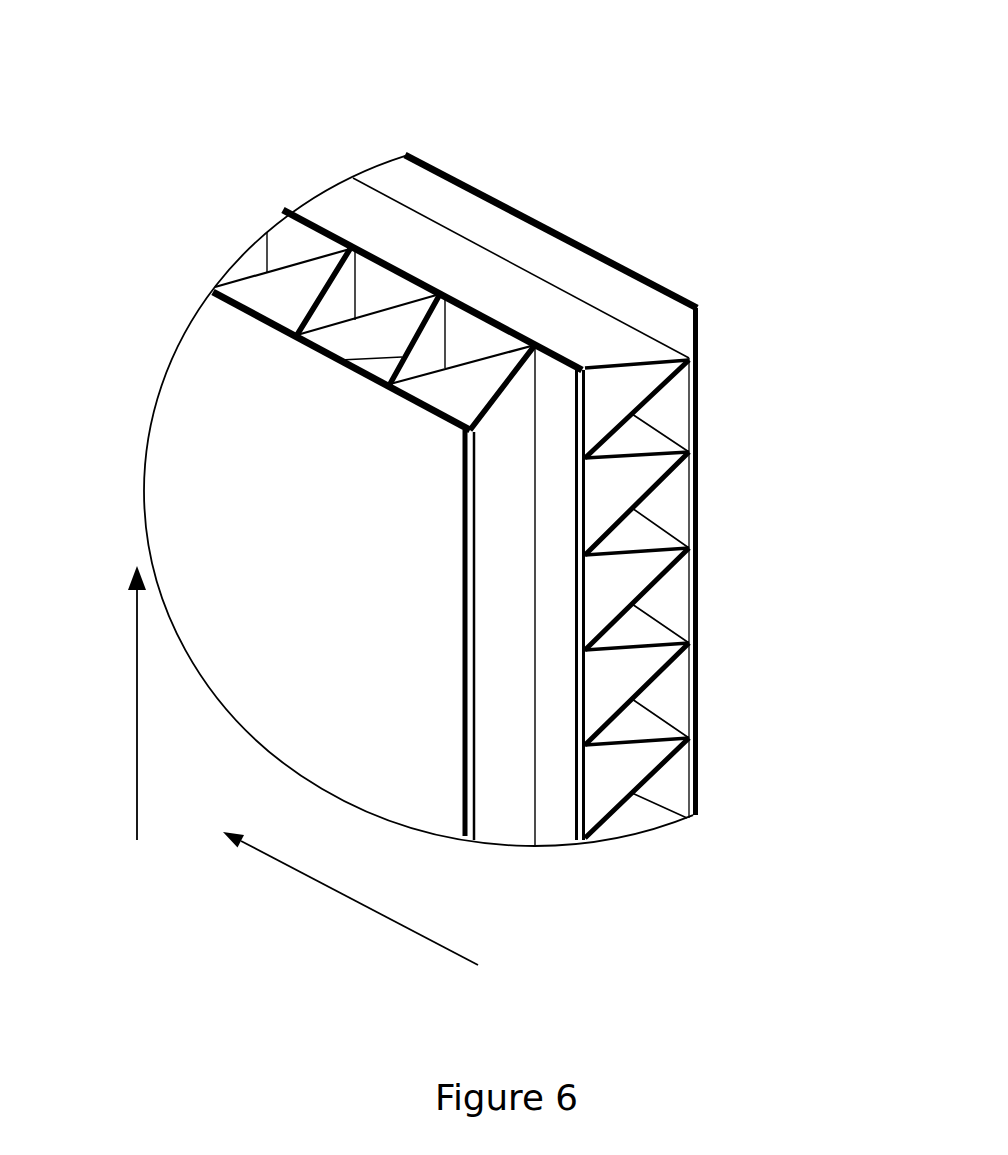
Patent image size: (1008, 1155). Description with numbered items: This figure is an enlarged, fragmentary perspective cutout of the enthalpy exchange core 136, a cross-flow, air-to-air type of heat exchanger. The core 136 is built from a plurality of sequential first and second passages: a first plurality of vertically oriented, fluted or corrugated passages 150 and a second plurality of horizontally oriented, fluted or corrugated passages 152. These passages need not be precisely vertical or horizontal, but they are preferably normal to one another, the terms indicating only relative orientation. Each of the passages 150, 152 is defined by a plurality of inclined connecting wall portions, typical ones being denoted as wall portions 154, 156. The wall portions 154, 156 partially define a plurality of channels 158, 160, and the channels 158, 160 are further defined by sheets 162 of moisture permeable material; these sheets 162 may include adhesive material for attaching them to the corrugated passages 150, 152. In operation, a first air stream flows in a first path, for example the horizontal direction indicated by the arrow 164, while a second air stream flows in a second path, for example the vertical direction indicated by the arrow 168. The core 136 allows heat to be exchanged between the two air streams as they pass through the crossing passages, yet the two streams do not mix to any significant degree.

The enthalpy exchange core 136 is at (529, 134).
The first plurality of vertically oriented fluted or corrugated passages 150 is at (287, 253).
The second plurality of horizontally oriented fluted or corrugated passages 152 is at (592, 285).
The inclined connecting wall portion 154 is at (300, 350).
The inclined connecting wall portion 156 is at (697, 407).
The channel 158 is at (455, 347).
The channel 160 is at (663, 513).
The sheet of moisture permeable material 162 is at (562, 352).
The arrow indicating horizontal direction 164 is at (350, 898).
The arrow indicating vertical direction 168 is at (103, 703).